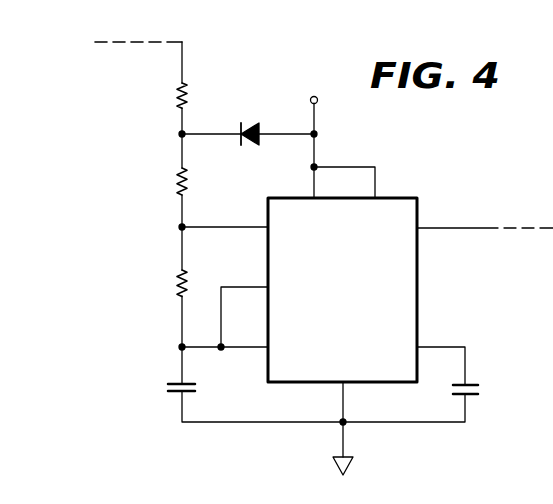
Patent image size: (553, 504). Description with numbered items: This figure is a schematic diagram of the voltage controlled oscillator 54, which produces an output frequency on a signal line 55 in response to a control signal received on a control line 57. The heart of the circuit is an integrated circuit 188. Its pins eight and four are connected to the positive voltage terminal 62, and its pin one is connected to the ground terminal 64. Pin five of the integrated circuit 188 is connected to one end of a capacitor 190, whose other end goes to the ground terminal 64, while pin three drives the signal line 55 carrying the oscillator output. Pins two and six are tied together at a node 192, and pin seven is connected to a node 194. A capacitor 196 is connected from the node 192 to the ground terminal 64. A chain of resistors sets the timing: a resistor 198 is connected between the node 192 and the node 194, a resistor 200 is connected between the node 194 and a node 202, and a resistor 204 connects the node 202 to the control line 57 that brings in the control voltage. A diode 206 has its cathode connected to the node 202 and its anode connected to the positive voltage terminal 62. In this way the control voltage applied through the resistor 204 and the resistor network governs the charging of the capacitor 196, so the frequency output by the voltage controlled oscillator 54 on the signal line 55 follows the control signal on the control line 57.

The control line 57 is at (184, 42).
The resistor 204 is at (177, 95).
The node 202 is at (179, 134).
The diode 206 is at (249, 121).
The positive voltage terminal 62 is at (317, 141).
The voltage controlled oscillator 54 is at (365, 267).
The integrated circuit 188 is at (420, 305).
The signal line 55 is at (458, 225).
The resistor 200 is at (176, 179).
The node 194 is at (176, 227).
The resistor 198 is at (176, 283).
The node 192 is at (178, 347).
The capacitor 196 is at (178, 397).
The capacitor 190 is at (470, 381).
The ground terminal 64 is at (348, 427).